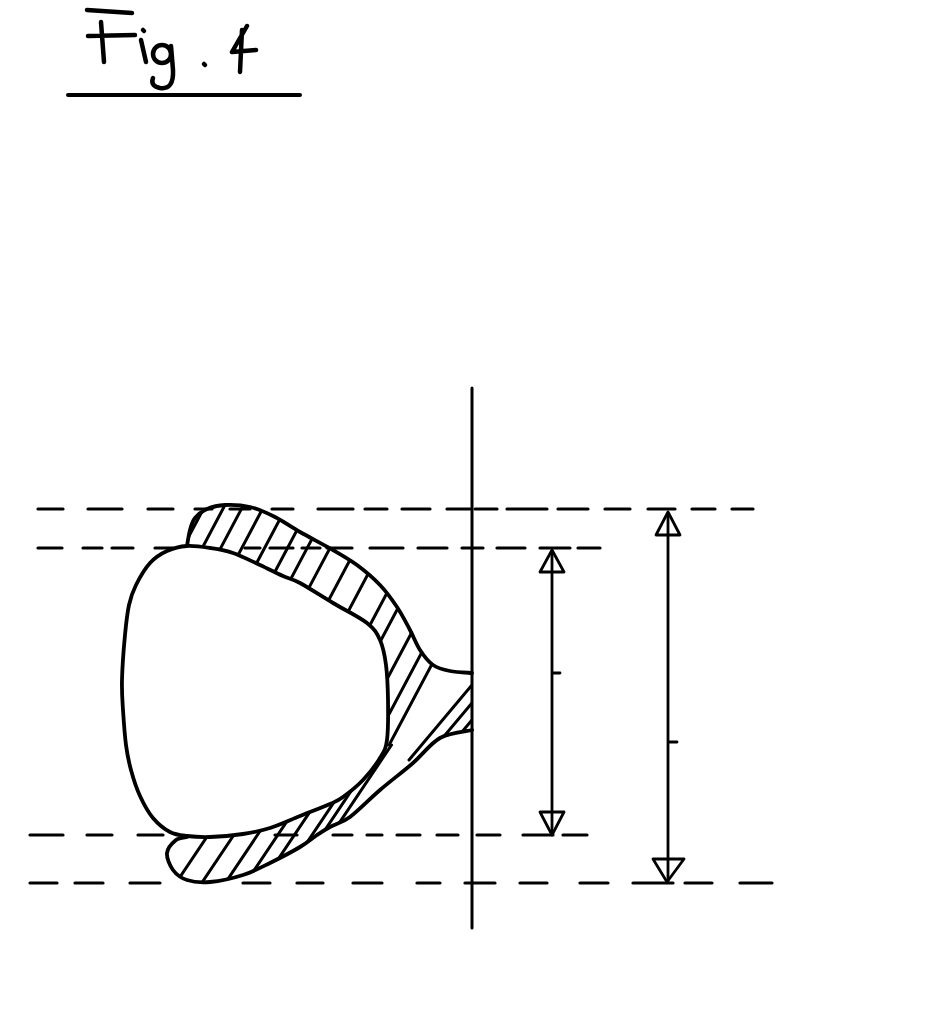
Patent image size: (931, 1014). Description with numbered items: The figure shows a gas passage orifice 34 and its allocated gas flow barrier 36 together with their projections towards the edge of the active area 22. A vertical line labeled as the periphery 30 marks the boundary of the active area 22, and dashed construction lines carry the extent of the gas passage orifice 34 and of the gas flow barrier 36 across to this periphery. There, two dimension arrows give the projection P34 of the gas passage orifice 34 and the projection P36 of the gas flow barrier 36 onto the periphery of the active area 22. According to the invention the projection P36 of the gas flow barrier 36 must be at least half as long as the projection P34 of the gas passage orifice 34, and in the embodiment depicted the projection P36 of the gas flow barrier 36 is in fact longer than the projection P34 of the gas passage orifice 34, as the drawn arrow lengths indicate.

The active area 22 is at (698, 458).
The periphery of disc 30 is at (503, 278).
The gas passage orifice 34 is at (260, 710).
The gas flow barrier 36 is at (306, 850).
The projection of the gas passage orifice P34 is at (584, 692).
The projection of the gas flow barrier P36 is at (706, 697).